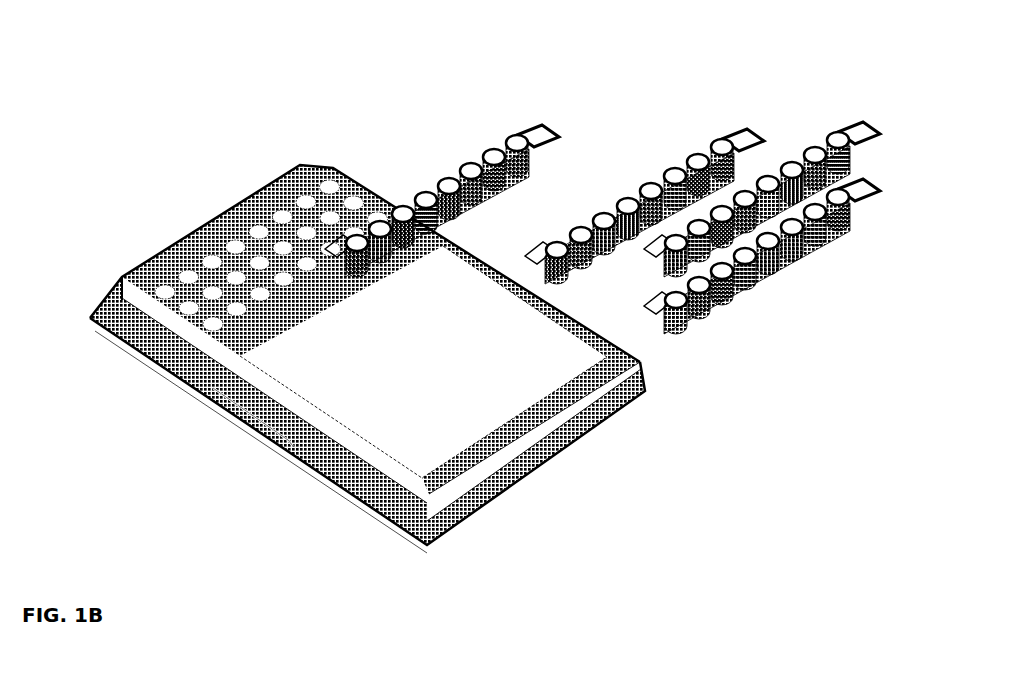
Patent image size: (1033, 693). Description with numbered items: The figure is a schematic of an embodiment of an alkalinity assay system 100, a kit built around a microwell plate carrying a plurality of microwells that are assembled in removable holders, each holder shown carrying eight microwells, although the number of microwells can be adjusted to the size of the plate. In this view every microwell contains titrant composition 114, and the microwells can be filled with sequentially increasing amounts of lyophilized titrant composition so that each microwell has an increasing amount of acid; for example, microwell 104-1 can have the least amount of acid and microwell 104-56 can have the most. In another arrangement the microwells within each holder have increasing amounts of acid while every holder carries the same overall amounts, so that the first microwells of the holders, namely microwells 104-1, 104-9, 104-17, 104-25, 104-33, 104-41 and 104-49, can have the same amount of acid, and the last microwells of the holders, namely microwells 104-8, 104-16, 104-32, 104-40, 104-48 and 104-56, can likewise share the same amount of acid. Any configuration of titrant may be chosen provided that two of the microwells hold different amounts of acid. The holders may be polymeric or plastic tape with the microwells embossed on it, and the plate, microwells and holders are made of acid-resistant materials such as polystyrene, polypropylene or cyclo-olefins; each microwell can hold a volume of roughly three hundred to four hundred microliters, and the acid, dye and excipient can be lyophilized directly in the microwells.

The alkalinity assay system 100 is at (167, 73).
The microwell 104-1 is at (165, 290).
The microwell 104-8 is at (335, 167).
The microwell 104-9 is at (118, 347).
The microwell 104-16 is at (354, 167).
The microwell 104-17 is at (150, 367).
The microwell 104-25 is at (366, 268).
The microwell 104-32 is at (527, 124).
The microwell 104-33 is at (557, 247).
The microwell 104-40 is at (726, 125).
The microwell 104-41 is at (677, 247).
The microwell 104-48 is at (845, 125).
The microwell 104-49 is at (680, 302).
The microwell 104-56 is at (848, 198).
The titrant composition 114 is at (533, 167).